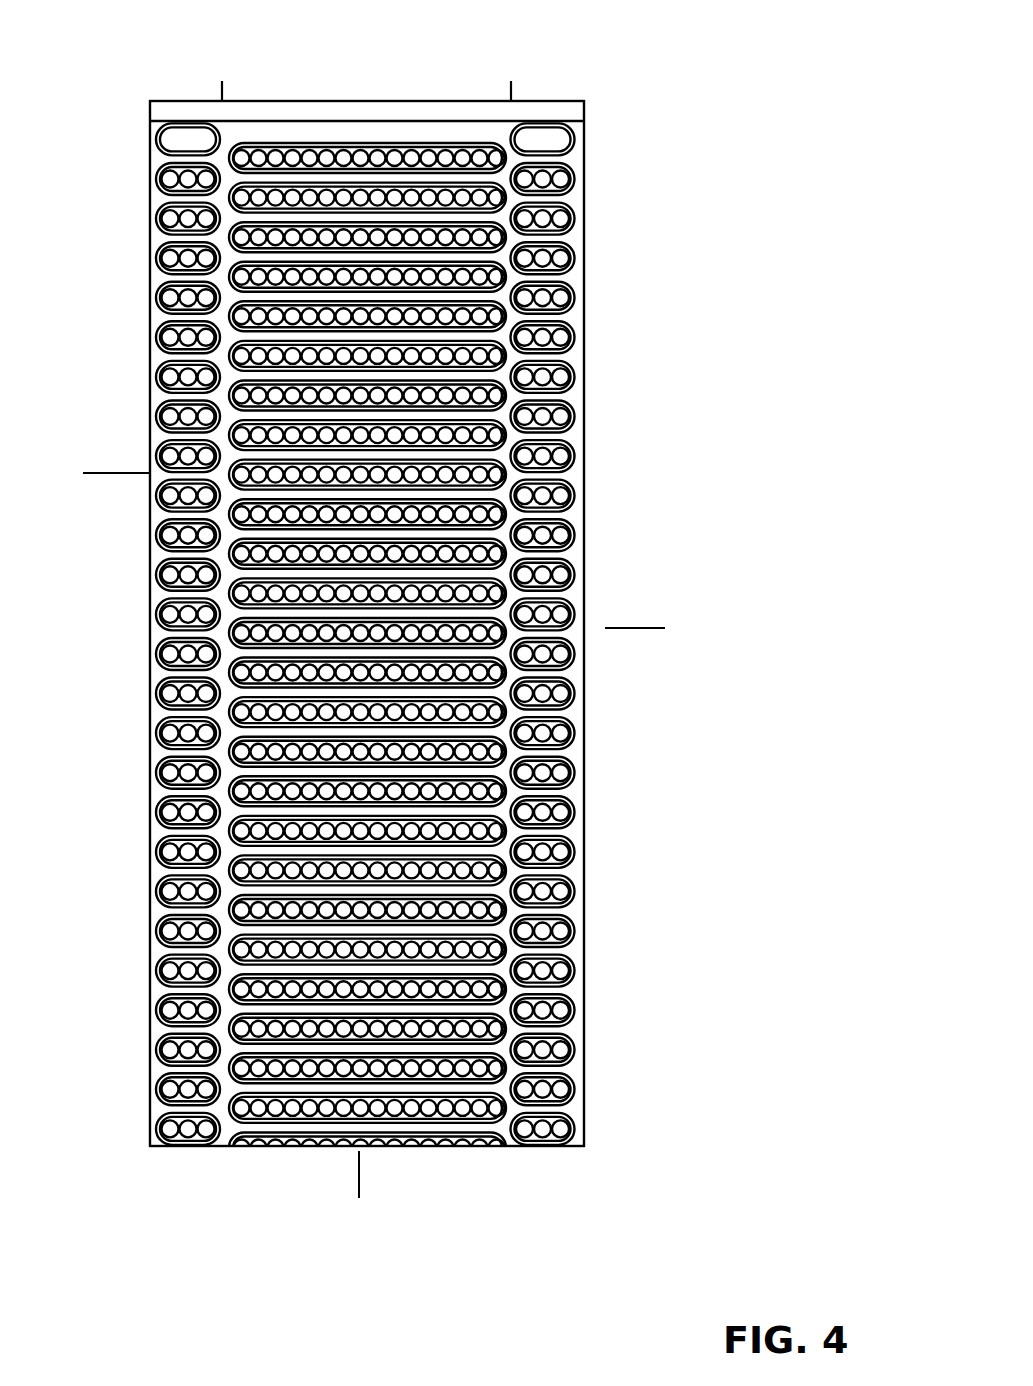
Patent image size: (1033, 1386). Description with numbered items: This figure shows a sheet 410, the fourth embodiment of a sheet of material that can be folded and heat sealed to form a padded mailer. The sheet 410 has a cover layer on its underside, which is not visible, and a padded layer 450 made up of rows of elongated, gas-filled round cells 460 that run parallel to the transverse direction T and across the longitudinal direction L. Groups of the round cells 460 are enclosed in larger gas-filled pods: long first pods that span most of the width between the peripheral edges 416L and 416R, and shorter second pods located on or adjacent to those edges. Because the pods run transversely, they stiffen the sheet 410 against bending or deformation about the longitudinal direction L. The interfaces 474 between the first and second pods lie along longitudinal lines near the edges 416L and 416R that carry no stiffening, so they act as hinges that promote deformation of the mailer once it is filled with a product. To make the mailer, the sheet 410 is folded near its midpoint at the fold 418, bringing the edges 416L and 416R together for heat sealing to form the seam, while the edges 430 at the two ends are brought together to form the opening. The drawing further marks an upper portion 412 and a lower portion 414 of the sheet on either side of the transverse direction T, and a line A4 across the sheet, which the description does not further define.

The sheet 410 is at (727, 29).
The upper region 412 is at (378, 365).
The lower region 414 is at (386, 635).
The peripheral edge 416L is at (157, 1082).
The peripheral edge 416R is at (580, 1114).
The fold 418 is at (128, 573).
The edge 430 is at (222, 1138).
The padded layer 450 is at (263, 133).
The round cells 460 is at (157, 924).
The interfaces 474 is at (207, 81).
The section axis A4 is at (101, 470).
The transverse direction T is at (645, 628).
The longitudinal direction L is at (360, 1191).